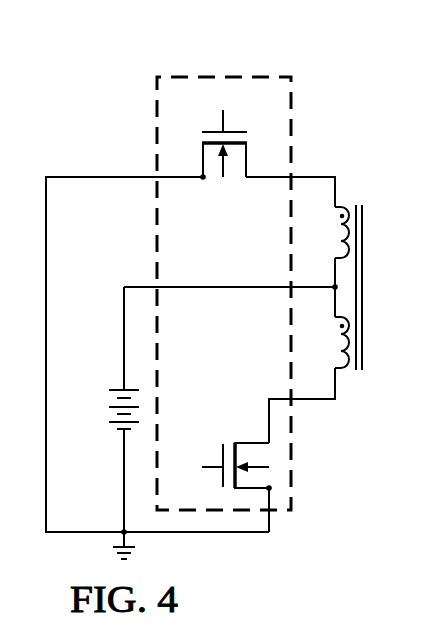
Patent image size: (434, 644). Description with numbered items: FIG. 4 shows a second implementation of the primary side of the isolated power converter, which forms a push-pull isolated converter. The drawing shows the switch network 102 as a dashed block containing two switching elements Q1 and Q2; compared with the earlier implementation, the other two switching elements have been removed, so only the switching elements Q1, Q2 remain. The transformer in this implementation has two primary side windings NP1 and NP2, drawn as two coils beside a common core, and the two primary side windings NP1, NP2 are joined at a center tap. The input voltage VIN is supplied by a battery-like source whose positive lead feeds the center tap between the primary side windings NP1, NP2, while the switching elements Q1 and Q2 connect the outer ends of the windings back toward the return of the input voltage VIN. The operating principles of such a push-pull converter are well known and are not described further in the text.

The switch network 102 is at (269, 66).
The switching element Q1 is at (224, 131).
The switching element Q2 is at (218, 465).
The primary side winding NP1 is at (327, 232).
The primary side winding NP2 is at (327, 342).
The input voltage source VIN is at (111, 393).